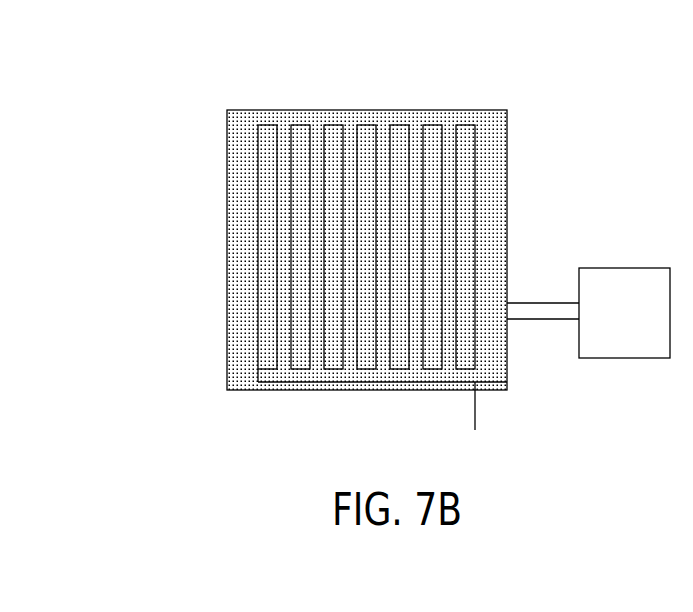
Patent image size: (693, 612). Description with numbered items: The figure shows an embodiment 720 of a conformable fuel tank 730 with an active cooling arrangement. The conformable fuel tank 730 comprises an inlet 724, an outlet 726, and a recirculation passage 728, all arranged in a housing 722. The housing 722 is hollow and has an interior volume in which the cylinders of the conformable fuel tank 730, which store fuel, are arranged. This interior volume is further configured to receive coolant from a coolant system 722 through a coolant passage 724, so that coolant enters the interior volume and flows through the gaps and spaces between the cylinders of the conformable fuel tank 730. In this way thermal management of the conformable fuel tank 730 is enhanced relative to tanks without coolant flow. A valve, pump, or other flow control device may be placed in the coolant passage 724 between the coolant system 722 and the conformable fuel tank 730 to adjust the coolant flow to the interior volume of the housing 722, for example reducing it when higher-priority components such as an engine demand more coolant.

The embodiment 720 is at (411, 246).
The housing 722 is at (227, 240).
The inlet 724 is at (545, 302).
The outlet 726 is at (258, 382).
The recirculation passage 728 is at (354, 383).
The conformable fuel tank 730 is at (265, 108).